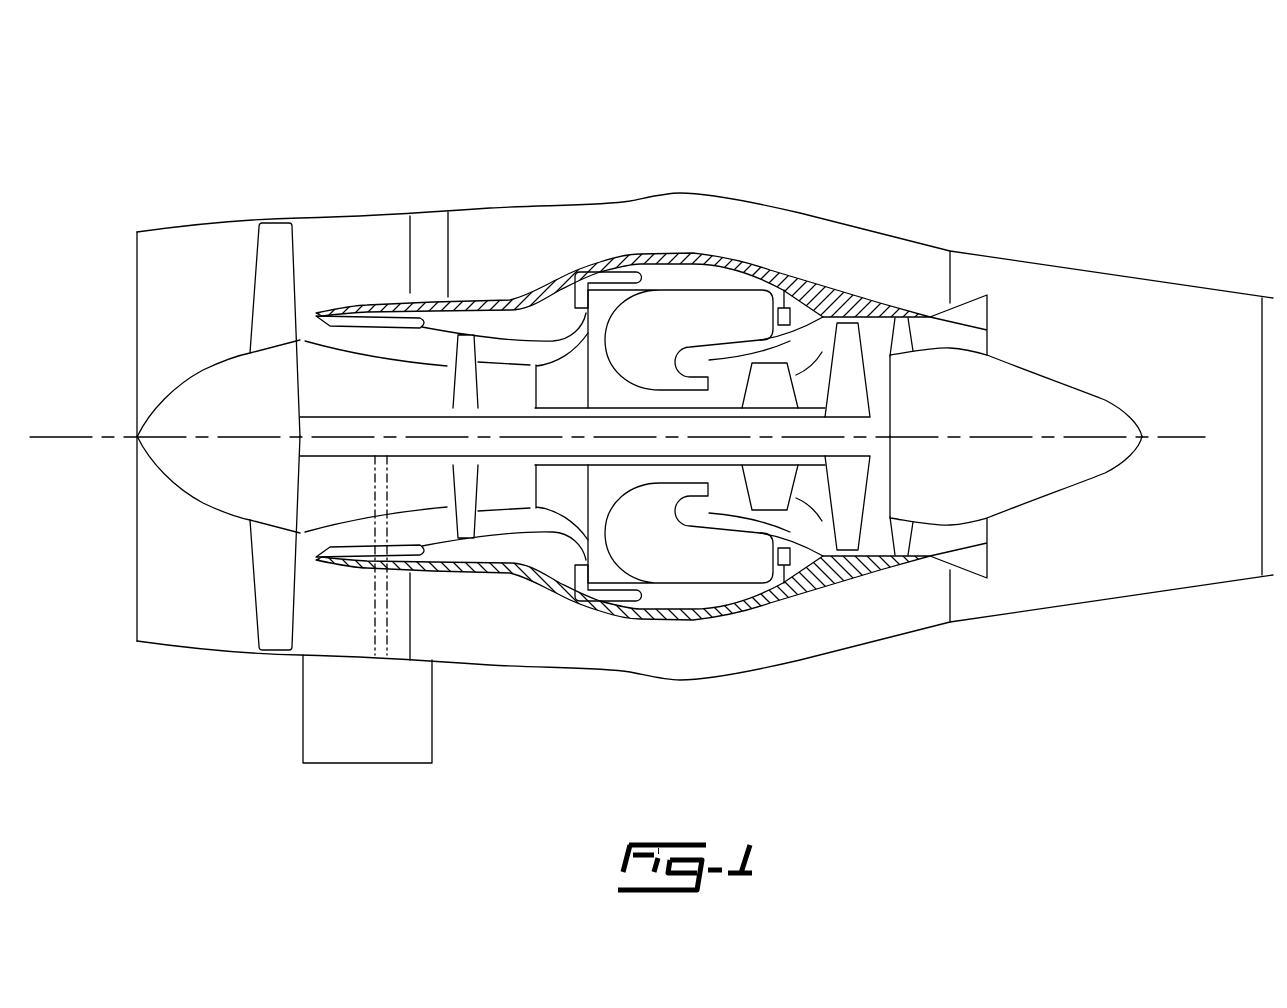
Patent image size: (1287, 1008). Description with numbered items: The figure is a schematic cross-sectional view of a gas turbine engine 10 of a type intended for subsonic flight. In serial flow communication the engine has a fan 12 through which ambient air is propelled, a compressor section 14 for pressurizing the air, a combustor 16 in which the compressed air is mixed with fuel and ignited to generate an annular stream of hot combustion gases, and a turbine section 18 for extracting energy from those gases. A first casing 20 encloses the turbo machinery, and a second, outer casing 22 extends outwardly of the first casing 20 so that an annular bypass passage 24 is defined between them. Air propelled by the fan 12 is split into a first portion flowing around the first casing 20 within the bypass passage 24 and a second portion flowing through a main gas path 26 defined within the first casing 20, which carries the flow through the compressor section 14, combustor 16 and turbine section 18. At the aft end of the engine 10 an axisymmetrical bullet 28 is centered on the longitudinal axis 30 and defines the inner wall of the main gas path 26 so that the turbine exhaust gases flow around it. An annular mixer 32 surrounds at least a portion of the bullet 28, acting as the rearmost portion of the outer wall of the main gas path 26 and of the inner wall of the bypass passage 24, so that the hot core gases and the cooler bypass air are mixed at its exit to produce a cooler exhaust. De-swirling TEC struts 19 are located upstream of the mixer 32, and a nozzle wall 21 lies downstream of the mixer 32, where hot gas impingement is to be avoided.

The gas turbine engine 10 is at (830, 150).
The fan 12 is at (268, 573).
The compressor section 14 is at (520, 355).
The combustor 16 is at (692, 308).
The turbine section 18 is at (808, 495).
The de-swirling TEC struts 19 is at (903, 337).
The first casing 20 is at (840, 305).
The nozzle wall 21 is at (1170, 287).
The second outer casing 22 is at (950, 250).
The annular bypass passage 24 is at (918, 590).
The main gas path 26 is at (386, 343).
The axisymmetrical bullet 28 is at (1047, 400).
The longitudinal axis 30 is at (1163, 435).
The annular mixer 32 is at (973, 560).